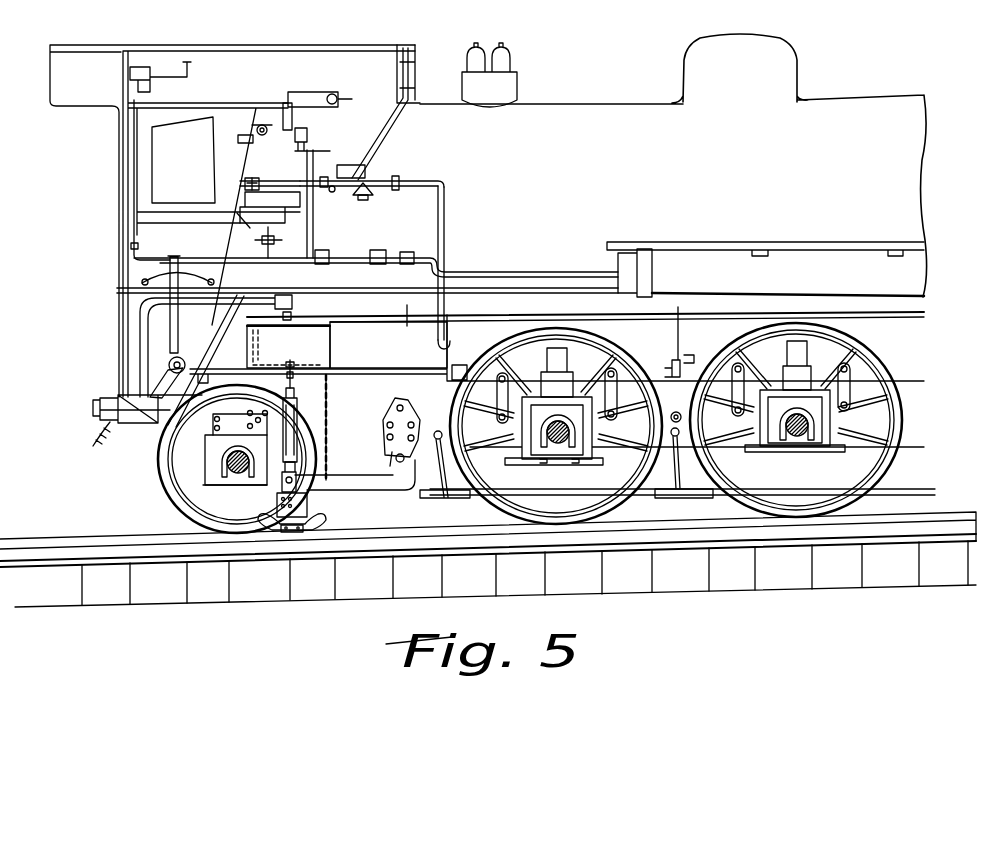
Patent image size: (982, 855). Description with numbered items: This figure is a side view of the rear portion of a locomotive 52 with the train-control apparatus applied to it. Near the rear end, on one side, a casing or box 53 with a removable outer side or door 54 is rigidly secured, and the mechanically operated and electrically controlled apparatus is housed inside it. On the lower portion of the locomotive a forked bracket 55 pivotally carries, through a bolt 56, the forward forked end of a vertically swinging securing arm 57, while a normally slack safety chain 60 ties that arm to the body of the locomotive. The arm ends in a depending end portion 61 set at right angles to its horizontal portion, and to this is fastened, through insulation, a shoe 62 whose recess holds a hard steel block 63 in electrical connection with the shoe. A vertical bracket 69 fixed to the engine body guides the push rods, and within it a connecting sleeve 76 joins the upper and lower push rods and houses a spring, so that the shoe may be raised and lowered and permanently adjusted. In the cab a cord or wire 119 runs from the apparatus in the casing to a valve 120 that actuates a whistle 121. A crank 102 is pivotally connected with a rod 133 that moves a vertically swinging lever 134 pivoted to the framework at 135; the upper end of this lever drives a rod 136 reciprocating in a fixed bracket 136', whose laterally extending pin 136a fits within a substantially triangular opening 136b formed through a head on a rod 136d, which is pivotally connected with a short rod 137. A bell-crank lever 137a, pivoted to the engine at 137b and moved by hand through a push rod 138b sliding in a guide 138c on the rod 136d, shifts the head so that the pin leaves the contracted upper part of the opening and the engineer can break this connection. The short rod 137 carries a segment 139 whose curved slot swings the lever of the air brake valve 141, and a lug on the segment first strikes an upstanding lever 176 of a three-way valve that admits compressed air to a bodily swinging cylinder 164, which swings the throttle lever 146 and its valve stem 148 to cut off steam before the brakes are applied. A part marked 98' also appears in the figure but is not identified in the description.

The locomotive 52 is at (673, 165).
The casing or box 53 is at (330, 345).
The removable outer side or door 54 is at (288, 346).
The forked bracket 55 is at (407, 412).
The bolt 56 is at (396, 460).
The vertically swinging arm 57 is at (370, 485).
The safety chain 60 is at (330, 400).
The depending end portion 61 is at (283, 507).
The shoe 62 is at (322, 523).
The hard steel block 63 is at (288, 532).
The vertical bracket 69 is at (297, 455).
The connecting sleeve 76 is at (297, 437).
The rod 98' is at (269, 375).
The crank 102 is at (250, 348).
The cord or wire 119 is at (283, 317).
The valve 120 is at (292, 302).
The whistle 121 is at (190, 70).
The rod 133 is at (410, 324).
The vertically swinging lever 134 is at (441, 223).
The pivotal connection 135 is at (438, 345).
The rod 136 is at (384, 163).
The fixed bracket 136' is at (416, 158).
The laterally extending pin 136a is at (374, 202).
The triangular opening 136b is at (363, 200).
The rod 136d is at (332, 193).
The short rod 137 is at (237, 213).
The bell-crank lever 137a is at (353, 165).
The pivot 137b is at (365, 166).
The push rod 138b is at (323, 178).
The guide 138c is at (300, 240).
The segment 139 is at (240, 182).
The air brake valve 141 is at (257, 207).
The throttle lever 146 is at (240, 138).
The valve stem 148 is at (254, 180).
The bodily swinging cylinder 164 is at (257, 123).
The upstanding lever 176 is at (283, 142).